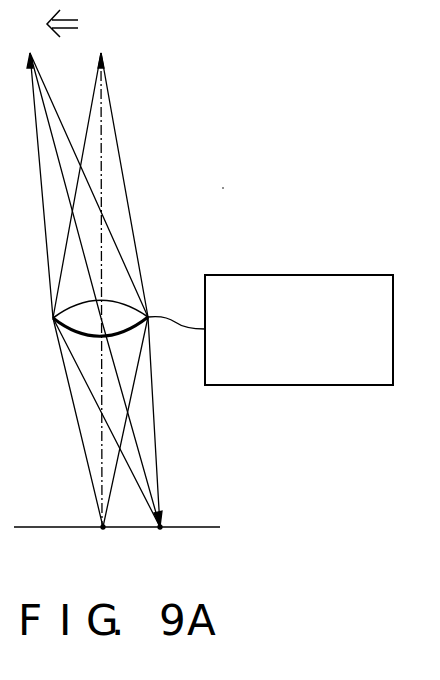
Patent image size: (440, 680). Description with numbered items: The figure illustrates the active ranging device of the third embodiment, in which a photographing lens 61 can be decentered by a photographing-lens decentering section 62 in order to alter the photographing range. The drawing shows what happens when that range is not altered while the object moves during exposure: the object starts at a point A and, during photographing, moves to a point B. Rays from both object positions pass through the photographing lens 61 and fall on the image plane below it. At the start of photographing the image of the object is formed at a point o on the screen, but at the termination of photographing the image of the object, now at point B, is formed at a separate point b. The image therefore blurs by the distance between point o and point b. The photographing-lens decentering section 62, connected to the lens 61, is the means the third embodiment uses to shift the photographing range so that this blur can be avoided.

The photographing lens 61 is at (133, 305).
The photographing-lens decentering section 62 is at (262, 275).
The point A is at (100, 165).
The point B is at (87, 165).
The point 0 o is at (100, 439).
The point b is at (109, 439).